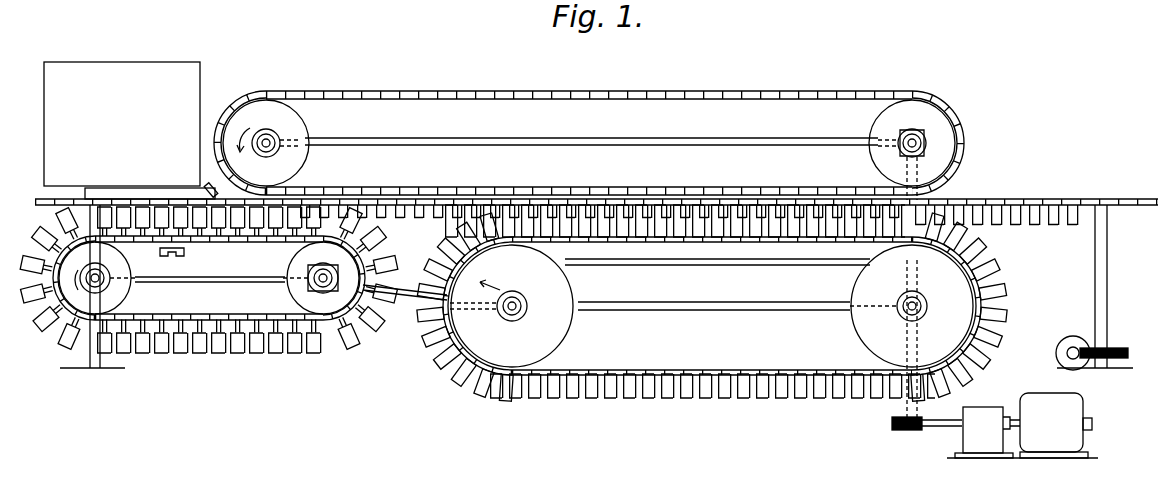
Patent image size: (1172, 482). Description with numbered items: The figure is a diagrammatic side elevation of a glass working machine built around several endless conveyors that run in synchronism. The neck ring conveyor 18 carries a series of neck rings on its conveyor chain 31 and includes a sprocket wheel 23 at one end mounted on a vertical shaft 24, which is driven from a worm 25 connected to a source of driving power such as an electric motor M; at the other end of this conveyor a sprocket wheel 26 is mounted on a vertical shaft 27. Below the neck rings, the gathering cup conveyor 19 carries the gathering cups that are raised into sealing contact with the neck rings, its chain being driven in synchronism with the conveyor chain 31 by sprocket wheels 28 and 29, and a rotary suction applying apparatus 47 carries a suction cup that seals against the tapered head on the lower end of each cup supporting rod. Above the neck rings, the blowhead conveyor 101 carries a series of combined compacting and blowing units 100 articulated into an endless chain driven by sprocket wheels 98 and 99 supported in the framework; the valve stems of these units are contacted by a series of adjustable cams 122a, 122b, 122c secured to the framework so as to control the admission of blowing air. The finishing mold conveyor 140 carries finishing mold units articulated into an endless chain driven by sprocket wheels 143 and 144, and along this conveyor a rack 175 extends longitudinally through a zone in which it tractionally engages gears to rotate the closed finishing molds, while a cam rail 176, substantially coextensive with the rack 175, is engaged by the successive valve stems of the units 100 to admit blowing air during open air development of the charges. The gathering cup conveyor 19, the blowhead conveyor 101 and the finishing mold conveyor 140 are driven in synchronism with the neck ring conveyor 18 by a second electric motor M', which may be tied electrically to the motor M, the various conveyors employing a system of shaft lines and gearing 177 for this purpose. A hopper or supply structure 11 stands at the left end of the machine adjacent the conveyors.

The hopper 11 is at (131, 130).
The neck ring conveyor 18 is at (596, 206).
The gathering cup conveyor 19 is at (209, 280).
The sprocket wheel 23 is at (1110, 206).
The vertical shaft 24 is at (1108, 303).
The worm 25 is at (1084, 368).
The sprocket wheel 26 is at (78, 206).
The vertical shaft 27 is at (104, 361).
The sprocket wheel 28 is at (132, 284).
The sprocket wheel 29 is at (302, 292).
The conveyor chain 31 is at (1052, 200).
The rotary suction applying apparatus 47 is at (172, 258).
The sprocket wheel 98 is at (300, 134).
The sprocket wheel 99 is at (942, 130).
The combined compacting and blowing heads or units 100 is at (388, 91).
The blowhead conveyor 101 is at (601, 132).
The cam 122a is at (380, 186).
The cam 122b is at (404, 188).
The cam 122c is at (476, 186).
The finishing mold conveyor 140 is at (712, 311).
The sprocket wheel 143 is at (560, 333).
The sprocket wheel 144 is at (868, 334).
The rack 175 is at (736, 263).
The cam rail 176 is at (606, 186).
The shaft lines and gearing 177 is at (456, 140).
The electric motor M is at (1078, 353).
The electric motor M' is at (1009, 425).